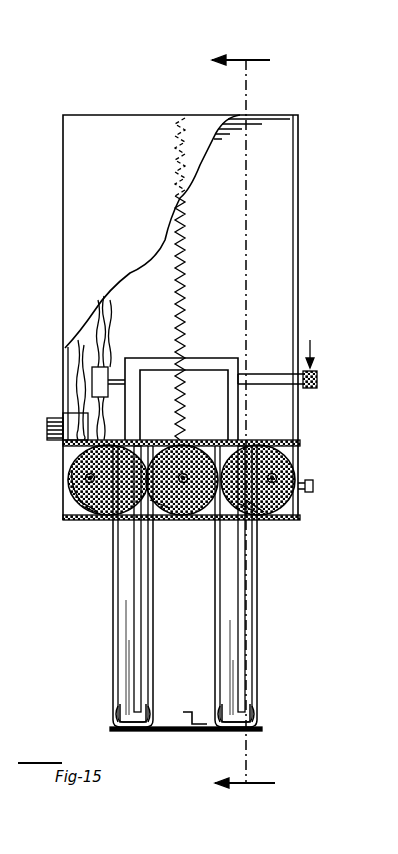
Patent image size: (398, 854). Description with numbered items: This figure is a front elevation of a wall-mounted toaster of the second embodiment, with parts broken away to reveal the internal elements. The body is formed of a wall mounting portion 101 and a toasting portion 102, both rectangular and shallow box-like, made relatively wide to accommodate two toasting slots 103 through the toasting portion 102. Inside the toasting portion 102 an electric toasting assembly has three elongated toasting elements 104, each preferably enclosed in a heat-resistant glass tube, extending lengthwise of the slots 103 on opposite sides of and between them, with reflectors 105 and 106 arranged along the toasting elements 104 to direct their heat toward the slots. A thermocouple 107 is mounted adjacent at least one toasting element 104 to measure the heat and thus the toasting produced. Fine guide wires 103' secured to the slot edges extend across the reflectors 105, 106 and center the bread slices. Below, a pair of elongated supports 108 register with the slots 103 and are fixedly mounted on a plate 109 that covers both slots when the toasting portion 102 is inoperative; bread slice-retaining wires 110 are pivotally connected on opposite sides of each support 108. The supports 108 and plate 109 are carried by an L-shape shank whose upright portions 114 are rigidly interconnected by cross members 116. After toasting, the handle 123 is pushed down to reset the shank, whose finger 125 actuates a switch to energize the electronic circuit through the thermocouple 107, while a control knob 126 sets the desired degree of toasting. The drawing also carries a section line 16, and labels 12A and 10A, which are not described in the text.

The section line 16- 16 is at (255, 427).
The wall mounting portion 101 is at (278, 222).
The thermocouple 107 is at (186, 238).
The wiring / connector 12A is at (92, 383).
The finger 125 is at (113, 368).
The cross members 116 is at (211, 366).
The handle 123 is at (318, 379).
The control knob 126 is at (50, 440).
The toasting slots 103 is at (208, 428).
The guide wires 103' is at (209, 483).
The toasting portion 102 is at (299, 450).
The reflectors 105 is at (299, 511).
The toasting elements 104 is at (198, 438).
The cam lobe 10A is at (75, 495).
The reflectors 106 is at (175, 522).
The bread slice-retaining wires 110 is at (113, 592).
The upright portions 114 is at (141, 632).
The supports 108 is at (120, 716).
The plate 109 is at (165, 727).